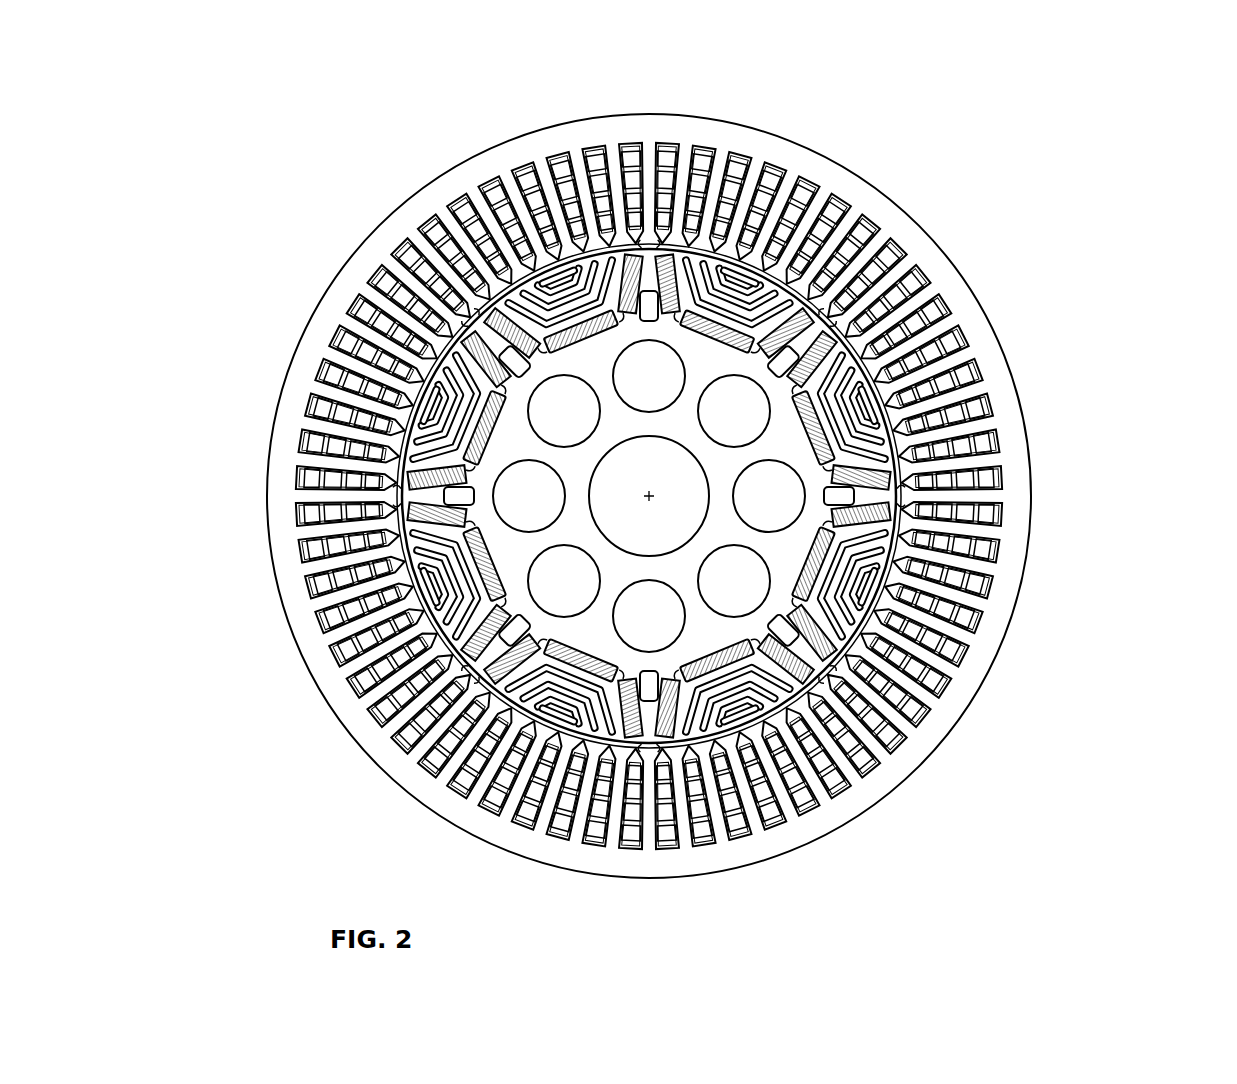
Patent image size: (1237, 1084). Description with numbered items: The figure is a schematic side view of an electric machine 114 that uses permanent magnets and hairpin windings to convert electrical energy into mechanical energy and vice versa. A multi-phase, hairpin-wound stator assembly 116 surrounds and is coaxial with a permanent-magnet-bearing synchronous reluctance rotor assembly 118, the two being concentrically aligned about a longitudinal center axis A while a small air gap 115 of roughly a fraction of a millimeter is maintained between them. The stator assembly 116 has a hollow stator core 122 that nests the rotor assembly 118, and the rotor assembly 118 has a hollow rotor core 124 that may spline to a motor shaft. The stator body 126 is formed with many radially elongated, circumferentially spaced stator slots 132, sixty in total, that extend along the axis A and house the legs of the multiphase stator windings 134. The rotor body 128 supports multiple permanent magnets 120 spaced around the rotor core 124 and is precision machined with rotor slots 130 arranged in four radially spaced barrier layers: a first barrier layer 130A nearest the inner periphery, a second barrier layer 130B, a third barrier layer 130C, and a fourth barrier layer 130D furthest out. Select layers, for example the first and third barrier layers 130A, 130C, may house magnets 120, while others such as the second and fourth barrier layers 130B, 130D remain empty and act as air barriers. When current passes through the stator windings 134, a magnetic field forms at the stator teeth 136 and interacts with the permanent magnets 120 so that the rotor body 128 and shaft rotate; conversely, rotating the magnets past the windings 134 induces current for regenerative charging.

The electric machine 114 is at (709, 465).
The air gap 115 is at (705, 450).
The stator assembly 116 is at (668, 489).
The rotor assembly 118 is at (398, 460).
The permanent magnets 120 is at (425, 473).
The stator core 122 is at (945, 551).
The rotor core 124 is at (607, 455).
The stator body 126 is at (978, 297).
The rotor body 128 is at (650, 248).
The rotor slots 130 is at (535, 392).
The first barrier layer 130A is at (505, 300).
The second barrier layer 130B is at (522, 292).
The third barrier layer 130C is at (537, 284).
The fourth barrier layer 130D is at (556, 276).
The stator slots 132 is at (1003, 450).
The stator windings 134 is at (982, 411).
The stator teeth 136 is at (818, 407).
The longitudinal center axis A is at (656, 498).